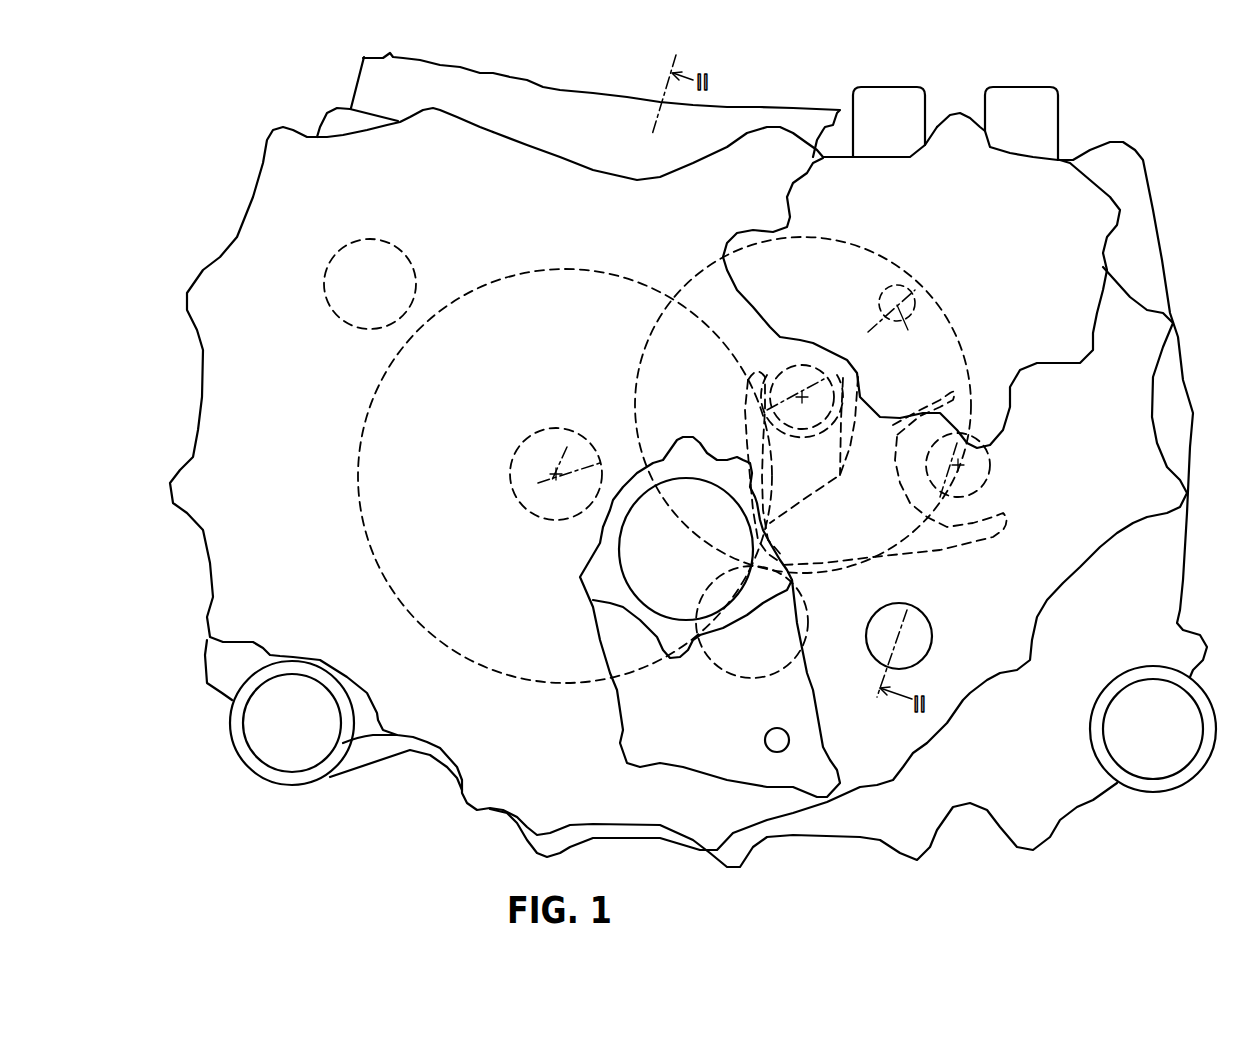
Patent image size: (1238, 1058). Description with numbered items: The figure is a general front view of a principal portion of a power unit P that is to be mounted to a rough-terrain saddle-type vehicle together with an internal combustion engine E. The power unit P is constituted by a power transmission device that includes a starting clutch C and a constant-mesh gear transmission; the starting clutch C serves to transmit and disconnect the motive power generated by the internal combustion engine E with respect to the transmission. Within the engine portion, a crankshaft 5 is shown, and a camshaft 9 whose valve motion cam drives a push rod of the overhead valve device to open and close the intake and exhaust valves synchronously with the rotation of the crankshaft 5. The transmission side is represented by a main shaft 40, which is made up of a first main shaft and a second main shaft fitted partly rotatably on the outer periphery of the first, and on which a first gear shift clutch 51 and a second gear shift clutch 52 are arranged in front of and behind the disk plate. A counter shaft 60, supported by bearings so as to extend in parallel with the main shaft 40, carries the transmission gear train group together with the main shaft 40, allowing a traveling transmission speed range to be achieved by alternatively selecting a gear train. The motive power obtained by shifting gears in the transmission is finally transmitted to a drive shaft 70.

The internal combustion engine E is at (322, 92).
The power unit P is at (183, 421).
The starting clutch C is at (518, 270).
The camshaft 9 is at (333, 293).
The crankshaft 5 is at (525, 440).
The main shaft 40 is at (788, 365).
The first gear shift clutch 51 is at (810, 376).
The second gear shift clutch 52 is at (865, 235).
The counter shaft 60 is at (990, 460).
The drive shaft 70 is at (925, 657).